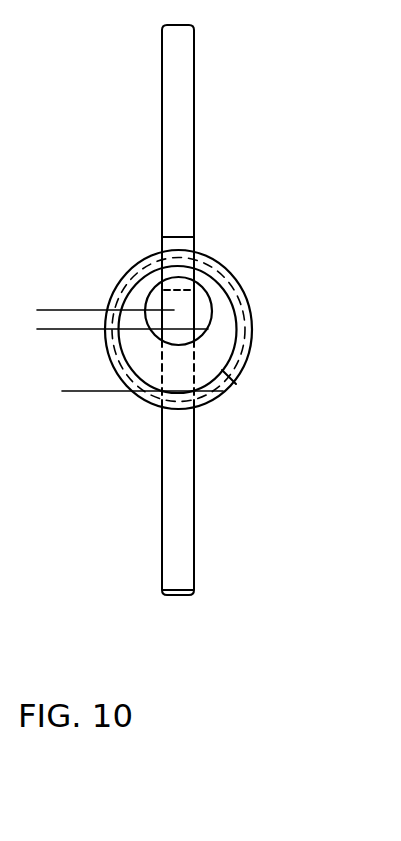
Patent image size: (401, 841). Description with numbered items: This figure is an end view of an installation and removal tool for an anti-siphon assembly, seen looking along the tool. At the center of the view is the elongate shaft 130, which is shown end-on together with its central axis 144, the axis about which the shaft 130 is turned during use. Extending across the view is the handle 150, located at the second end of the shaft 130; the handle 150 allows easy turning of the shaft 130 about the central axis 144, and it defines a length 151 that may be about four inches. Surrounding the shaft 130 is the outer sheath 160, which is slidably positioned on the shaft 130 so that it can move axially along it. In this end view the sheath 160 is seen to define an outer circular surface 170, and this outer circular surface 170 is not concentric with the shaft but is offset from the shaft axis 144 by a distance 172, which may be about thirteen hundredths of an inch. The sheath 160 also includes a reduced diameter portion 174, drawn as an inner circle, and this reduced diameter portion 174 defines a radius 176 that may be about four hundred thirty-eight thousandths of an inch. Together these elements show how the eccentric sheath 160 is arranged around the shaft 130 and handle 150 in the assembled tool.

The handle 150 is at (178, 123).
The length 151 is at (197, 28).
The outer circular surface 170 is at (230, 272).
The outer sheath 160 is at (222, 390).
The reduced diameter portion 174 is at (234, 370).
The elongate shaft 130 is at (209, 316).
The central axis 144 is at (77, 307).
The distance 172 is at (42, 360).
The radius 176 is at (70, 343).